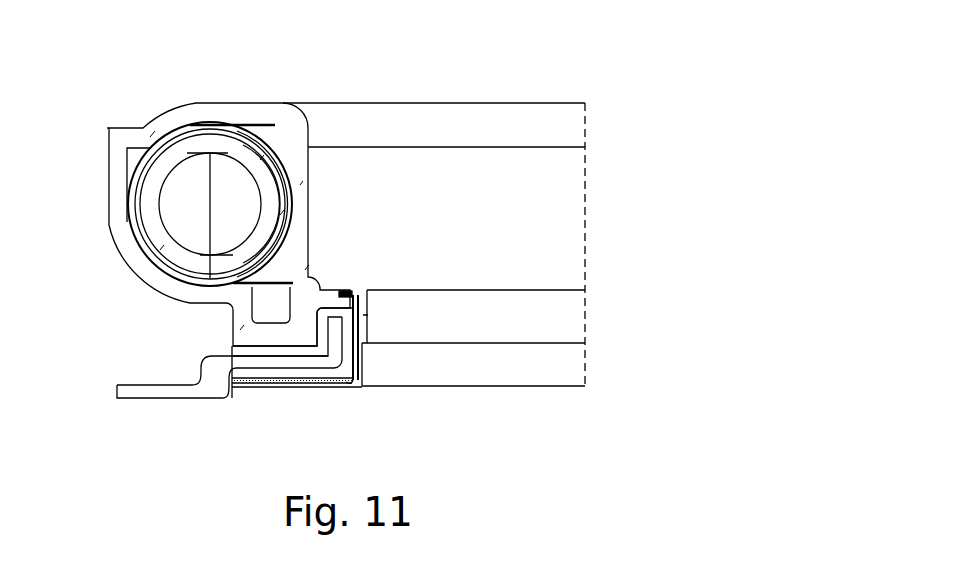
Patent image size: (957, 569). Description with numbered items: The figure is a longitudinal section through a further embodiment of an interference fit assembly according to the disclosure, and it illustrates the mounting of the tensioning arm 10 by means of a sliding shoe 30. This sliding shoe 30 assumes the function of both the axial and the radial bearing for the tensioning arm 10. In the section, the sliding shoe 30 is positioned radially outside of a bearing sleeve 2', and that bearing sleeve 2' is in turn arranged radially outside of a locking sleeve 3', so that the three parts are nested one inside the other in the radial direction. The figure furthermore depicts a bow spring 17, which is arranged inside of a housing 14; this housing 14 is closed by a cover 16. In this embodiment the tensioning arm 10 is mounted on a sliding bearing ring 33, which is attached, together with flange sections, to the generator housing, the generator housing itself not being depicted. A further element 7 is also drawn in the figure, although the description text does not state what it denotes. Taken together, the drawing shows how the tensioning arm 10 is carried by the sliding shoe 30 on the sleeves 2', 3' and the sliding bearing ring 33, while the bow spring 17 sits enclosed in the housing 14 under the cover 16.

The tensioning arm 10 is at (118, 233).
The bow spring 17 is at (137, 158).
The cover 16 is at (500, 116).
The housing 14 is at (563, 215).
The retaining clip 7 is at (352, 292).
The locking sleeve 3' is at (420, 382).
The bearing sleeve 2' is at (297, 408).
The sliding shoe 30 is at (340, 368).
The sliding bearing ring 33 is at (150, 393).